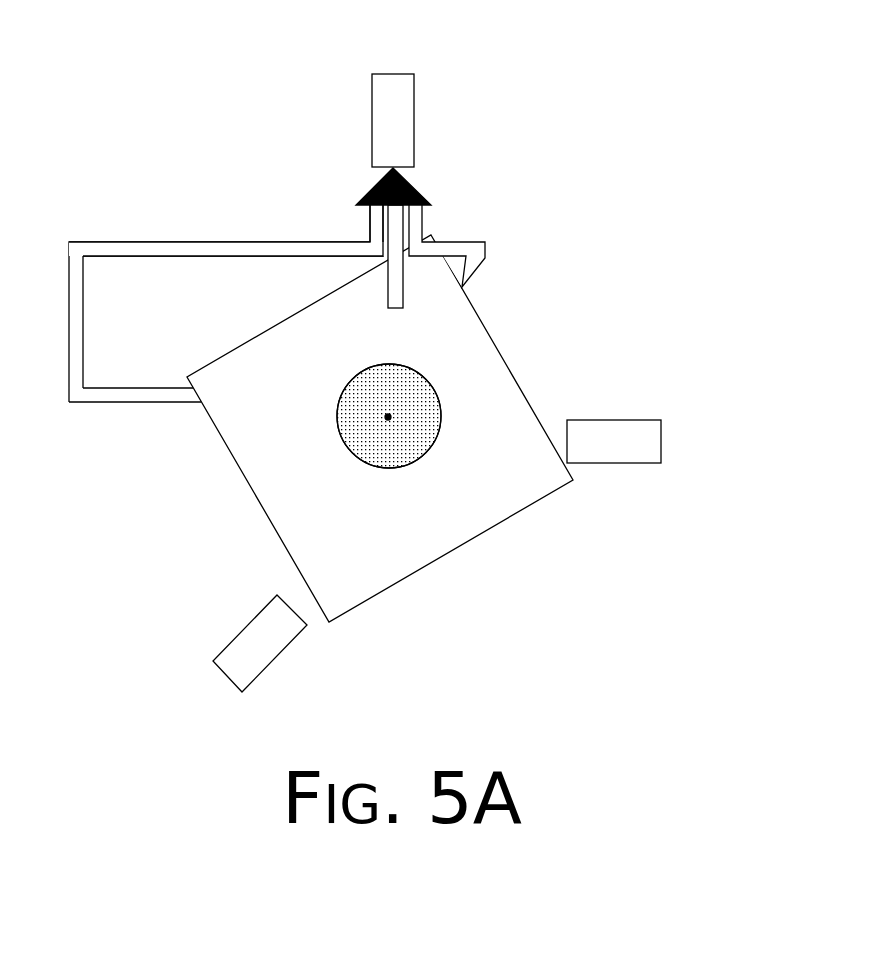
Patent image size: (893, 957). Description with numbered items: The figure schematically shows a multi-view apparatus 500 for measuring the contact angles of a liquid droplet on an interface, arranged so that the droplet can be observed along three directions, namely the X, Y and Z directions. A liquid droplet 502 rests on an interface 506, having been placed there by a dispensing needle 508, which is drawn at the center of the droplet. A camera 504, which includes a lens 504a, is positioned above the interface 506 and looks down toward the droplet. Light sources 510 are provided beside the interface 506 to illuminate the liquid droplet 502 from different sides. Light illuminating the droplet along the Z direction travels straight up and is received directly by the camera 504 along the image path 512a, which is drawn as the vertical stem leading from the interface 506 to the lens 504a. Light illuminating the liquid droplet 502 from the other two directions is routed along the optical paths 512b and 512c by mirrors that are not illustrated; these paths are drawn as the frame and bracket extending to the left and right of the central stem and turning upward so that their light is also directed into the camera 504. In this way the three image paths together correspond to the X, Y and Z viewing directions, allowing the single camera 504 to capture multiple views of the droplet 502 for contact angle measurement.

The multi-view apparatus 500 is at (657, 120).
The liquid droplet 502 is at (405, 365).
The camera 504 is at (414, 103).
The lens 504a is at (418, 188).
The interface 506 is at (500, 523).
The dispensing needle 508 is at (388, 417).
The light sources 510 is at (603, 420).
The image path 512a is at (388, 283).
The optical path 512b is at (107, 242).
The optical path 512c is at (477, 240).